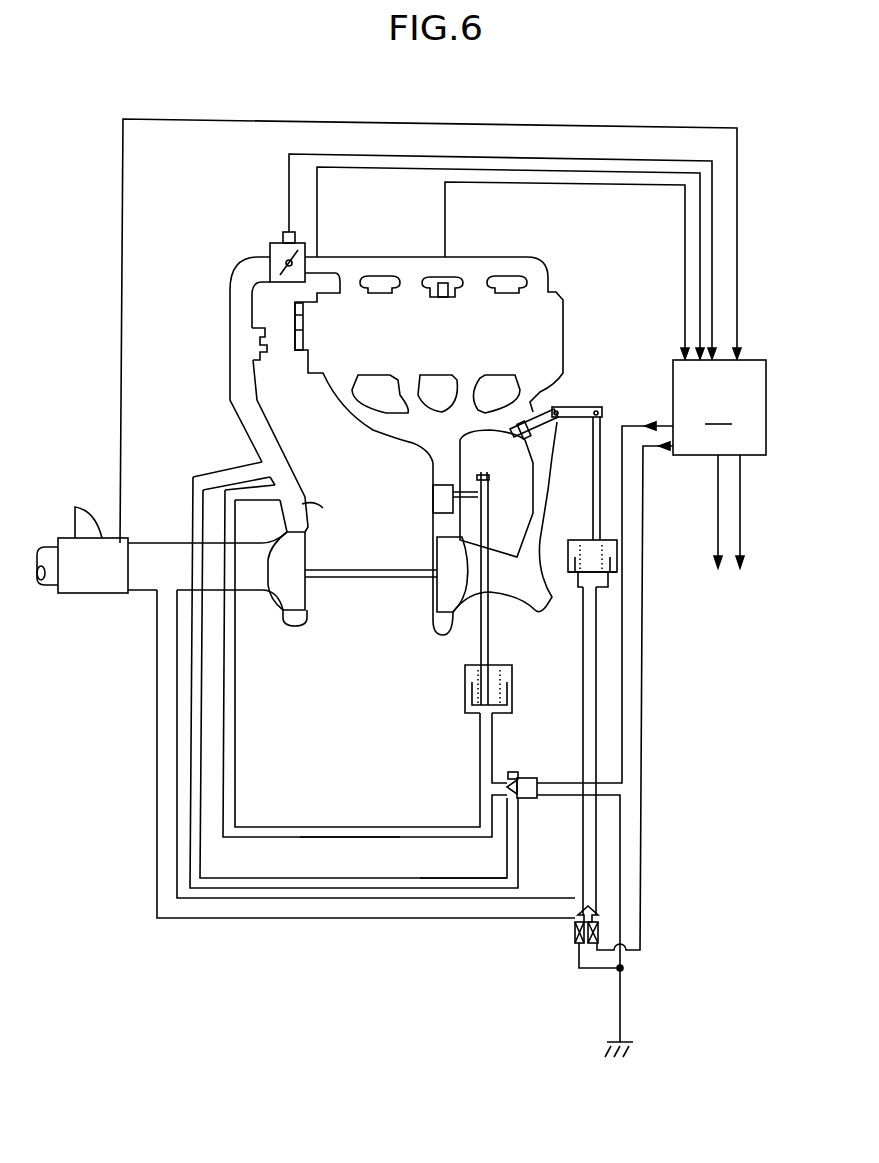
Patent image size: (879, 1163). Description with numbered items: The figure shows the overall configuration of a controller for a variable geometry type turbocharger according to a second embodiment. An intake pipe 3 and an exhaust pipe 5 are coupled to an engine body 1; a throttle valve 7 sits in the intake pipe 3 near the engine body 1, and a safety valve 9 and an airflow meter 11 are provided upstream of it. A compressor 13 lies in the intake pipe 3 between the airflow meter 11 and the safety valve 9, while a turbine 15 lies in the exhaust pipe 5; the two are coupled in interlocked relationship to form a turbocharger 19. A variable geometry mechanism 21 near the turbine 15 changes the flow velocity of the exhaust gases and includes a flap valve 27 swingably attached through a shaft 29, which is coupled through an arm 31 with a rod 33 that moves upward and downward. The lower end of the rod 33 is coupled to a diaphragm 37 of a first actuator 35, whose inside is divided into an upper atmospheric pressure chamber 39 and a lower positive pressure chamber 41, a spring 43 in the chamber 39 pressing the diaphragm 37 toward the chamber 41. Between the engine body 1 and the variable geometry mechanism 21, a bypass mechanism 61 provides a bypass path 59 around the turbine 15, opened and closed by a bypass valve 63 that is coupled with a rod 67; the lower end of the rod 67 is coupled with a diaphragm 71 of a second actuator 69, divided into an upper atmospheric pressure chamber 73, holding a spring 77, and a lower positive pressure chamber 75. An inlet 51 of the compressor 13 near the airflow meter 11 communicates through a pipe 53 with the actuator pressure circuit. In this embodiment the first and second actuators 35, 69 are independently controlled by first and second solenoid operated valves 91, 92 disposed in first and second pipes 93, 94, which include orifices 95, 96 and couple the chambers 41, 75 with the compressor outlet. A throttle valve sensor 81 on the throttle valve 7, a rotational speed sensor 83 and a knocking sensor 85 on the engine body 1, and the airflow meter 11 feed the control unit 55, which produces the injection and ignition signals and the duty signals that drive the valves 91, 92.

The engine body 1 is at (337, 411).
The intake pipe 3 is at (252, 412).
The exhaust pipe 5 is at (405, 425).
The throttle valve 7 is at (282, 284).
The safety valve 9 is at (268, 358).
The airflow meter 11 is at (108, 590).
The compressor 13 is at (293, 604).
The turbine 15 is at (443, 594).
The turbocharger 19 is at (412, 630).
The variable geometry mechanism 21 is at (422, 508).
The flap valve 27 is at (438, 498).
The shaft 29 is at (478, 482).
The arm 31 is at (496, 493).
The rod 33 is at (489, 524).
The first actuator 35 is at (493, 700).
The diaphragm 37 is at (466, 690).
The atmospheric pressure chamber 39 is at (512, 676).
The positive pressure chamber 41 is at (512, 705).
The spring 43 is at (503, 674).
The inlet 51 is at (247, 590).
The pipe 53 is at (340, 918).
The control unit 55 is at (443, 588).
The bypass path 59 is at (548, 498).
The bypass mechanism 61 is at (607, 396).
The bypass valve 63 is at (553, 392).
The rod 67 is at (594, 462).
The second actuator 69 is at (627, 555).
The diaphragm 71 is at (613, 562).
The atmospheric pressure chamber 73 is at (612, 553).
The positive pressure chamber 75 is at (576, 590).
The spring 77 is at (603, 541).
The throttle valve sensor 81 is at (283, 237).
The rotational speed sensor 83 is at (295, 315).
The knocking sensor 85 is at (447, 277).
The first solenoid operated valve 91 is at (528, 778).
The second solenoid operated valve 92 is at (574, 932).
The first pipe 93 is at (305, 827).
The second pipe 94 is at (310, 872).
The orifice 95 is at (370, 836).
The orifice 96 is at (493, 878).